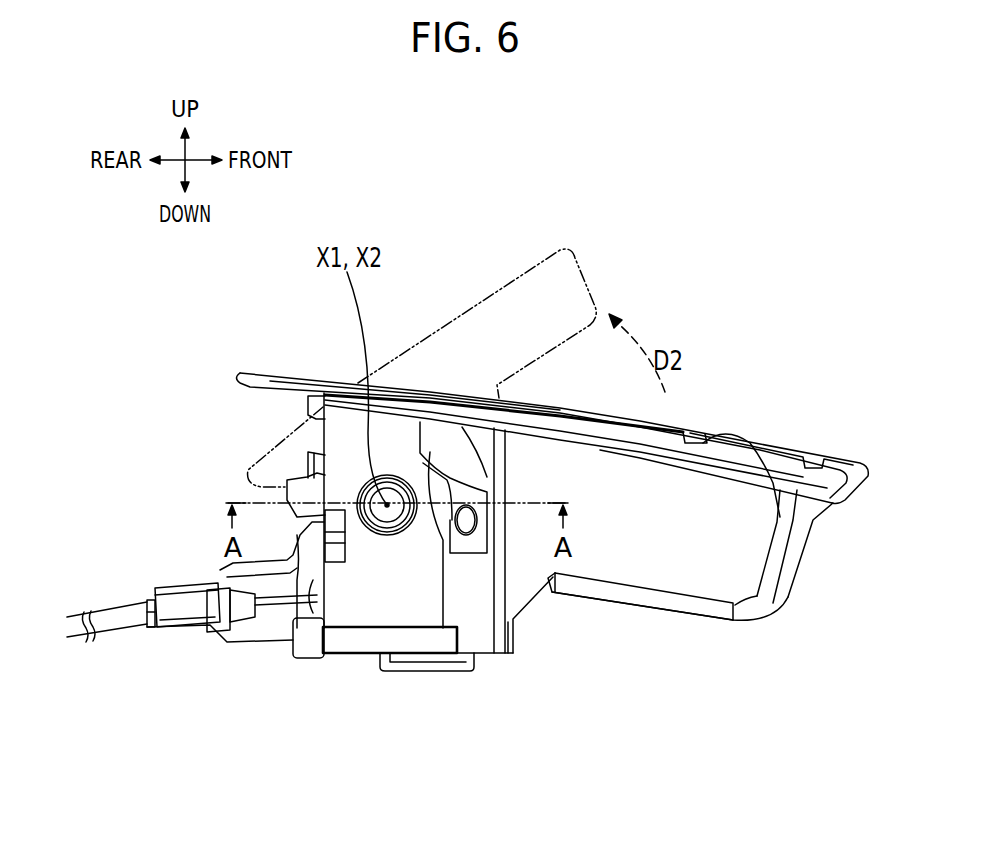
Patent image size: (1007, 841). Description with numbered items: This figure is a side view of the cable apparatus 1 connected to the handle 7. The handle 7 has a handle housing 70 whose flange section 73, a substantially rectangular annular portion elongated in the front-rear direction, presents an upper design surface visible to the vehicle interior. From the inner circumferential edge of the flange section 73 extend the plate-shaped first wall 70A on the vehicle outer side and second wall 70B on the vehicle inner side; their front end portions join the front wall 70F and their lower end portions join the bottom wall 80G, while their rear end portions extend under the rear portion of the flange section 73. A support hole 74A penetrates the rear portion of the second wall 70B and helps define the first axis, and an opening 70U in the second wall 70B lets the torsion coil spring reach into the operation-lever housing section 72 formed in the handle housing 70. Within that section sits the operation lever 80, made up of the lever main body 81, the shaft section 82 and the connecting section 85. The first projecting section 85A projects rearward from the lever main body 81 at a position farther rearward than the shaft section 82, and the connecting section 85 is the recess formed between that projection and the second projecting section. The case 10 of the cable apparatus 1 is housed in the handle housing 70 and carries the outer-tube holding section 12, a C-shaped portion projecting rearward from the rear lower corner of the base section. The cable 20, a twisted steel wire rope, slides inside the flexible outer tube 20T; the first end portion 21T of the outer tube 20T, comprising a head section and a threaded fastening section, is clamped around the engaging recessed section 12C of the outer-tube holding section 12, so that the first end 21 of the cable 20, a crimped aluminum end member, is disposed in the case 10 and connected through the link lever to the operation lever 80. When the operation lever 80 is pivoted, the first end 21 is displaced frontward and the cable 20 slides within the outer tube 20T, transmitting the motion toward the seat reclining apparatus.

The cable apparatus 1 is at (138, 560).
The handle 7 is at (810, 313).
The case 10 is at (222, 652).
The outer-tube holding section 12 is at (185, 631).
The engaging recessed section 12C is at (215, 595).
The cable 20 is at (270, 614).
The outer tube 20T is at (100, 614).
The first end 21 is at (305, 625).
The first end portion 21T is at (157, 634).
The handle housing 70 is at (835, 450).
The first wall 70A is at (778, 455).
The second wall 70B is at (722, 545).
The front wall 70F is at (788, 578).
The opening 70U is at (481, 492).
The operation-lever housing section 72 is at (793, 520).
The flange section 73 is at (275, 374).
The support hole 74A is at (397, 555).
The operation lever 80 is at (586, 272).
The bottom wall 80G is at (652, 598).
The lever main body 81 is at (610, 418).
The shaft section 82 is at (405, 476).
The connecting section 85 is at (297, 533).
The first projecting section 85A is at (270, 475).